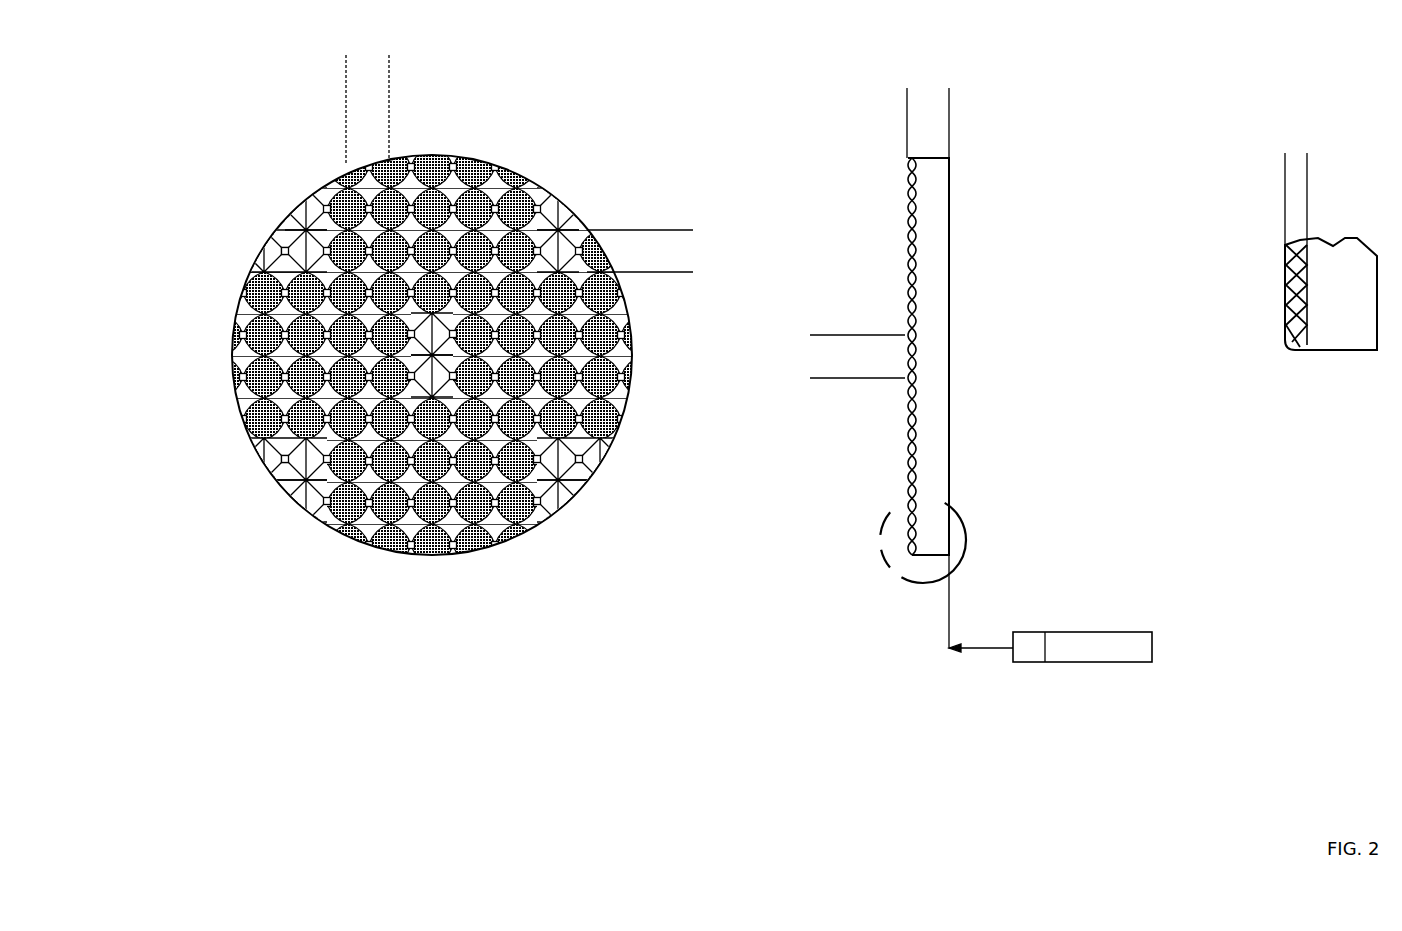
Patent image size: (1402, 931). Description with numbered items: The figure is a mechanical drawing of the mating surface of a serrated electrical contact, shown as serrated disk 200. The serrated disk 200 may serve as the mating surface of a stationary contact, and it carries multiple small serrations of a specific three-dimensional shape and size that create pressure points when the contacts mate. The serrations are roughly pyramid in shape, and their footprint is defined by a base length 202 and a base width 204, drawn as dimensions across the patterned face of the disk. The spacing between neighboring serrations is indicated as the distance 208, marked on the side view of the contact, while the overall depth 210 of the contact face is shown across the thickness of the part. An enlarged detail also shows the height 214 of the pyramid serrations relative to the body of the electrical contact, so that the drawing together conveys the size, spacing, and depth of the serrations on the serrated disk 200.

The serrated disk 200 is at (290, 207).
The base length 202 is at (428, 60).
The base width 204 is at (685, 200).
The distance between serrations 208 is at (818, 298).
The overall depth 210 is at (980, 93).
The height of the pyramid serrations 214 is at (1337, 160).